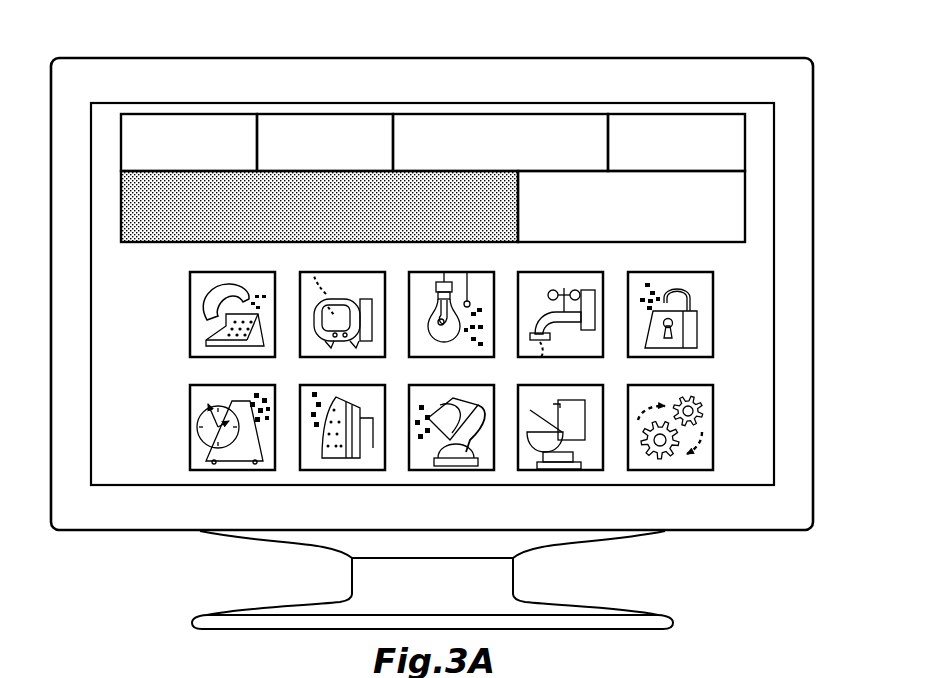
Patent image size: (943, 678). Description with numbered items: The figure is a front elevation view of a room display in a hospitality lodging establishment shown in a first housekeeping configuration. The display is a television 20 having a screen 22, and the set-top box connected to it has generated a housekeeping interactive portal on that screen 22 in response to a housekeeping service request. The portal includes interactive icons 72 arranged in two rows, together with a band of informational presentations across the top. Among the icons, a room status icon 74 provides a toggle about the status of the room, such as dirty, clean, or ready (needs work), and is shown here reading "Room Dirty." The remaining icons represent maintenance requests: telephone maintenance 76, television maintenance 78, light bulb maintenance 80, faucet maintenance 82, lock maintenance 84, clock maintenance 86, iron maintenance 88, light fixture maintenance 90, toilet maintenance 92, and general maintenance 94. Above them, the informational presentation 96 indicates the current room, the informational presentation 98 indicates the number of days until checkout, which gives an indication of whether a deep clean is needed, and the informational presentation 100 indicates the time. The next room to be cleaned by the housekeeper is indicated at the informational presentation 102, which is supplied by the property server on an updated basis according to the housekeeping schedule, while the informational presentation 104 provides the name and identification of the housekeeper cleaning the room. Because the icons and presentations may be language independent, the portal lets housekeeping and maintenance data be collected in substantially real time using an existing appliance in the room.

The television 20 is at (115, 54).
The screen 22 is at (93, 453).
The interactive icons 72 is at (180, 345).
The room status toggle icon 74 is at (124, 206).
The telephone maintenance icon 76 is at (222, 273).
The television maintenance icon 78 is at (344, 273).
The light bulb maintenance icon 80 is at (457, 273).
The faucet maintenance icon 82 is at (564, 273).
The lock maintenance icon 84 is at (674, 273).
The clock maintenance icon 86 is at (223, 386).
The iron maintenance icon 88 is at (346, 386).
The light fixture maintenance icon 90 is at (457, 386).
The toilet maintenance icon 92 is at (563, 386).
The general maintenance icon 94 is at (672, 386).
The current room informational presentation 96 is at (193, 113).
The days until checkout informational presentation 98 is at (333, 113).
The time informational presentation 100 is at (497, 113).
The next room informational presentation 102 is at (676, 113).
The housekeeper identification informational presentation 104 is at (740, 213).